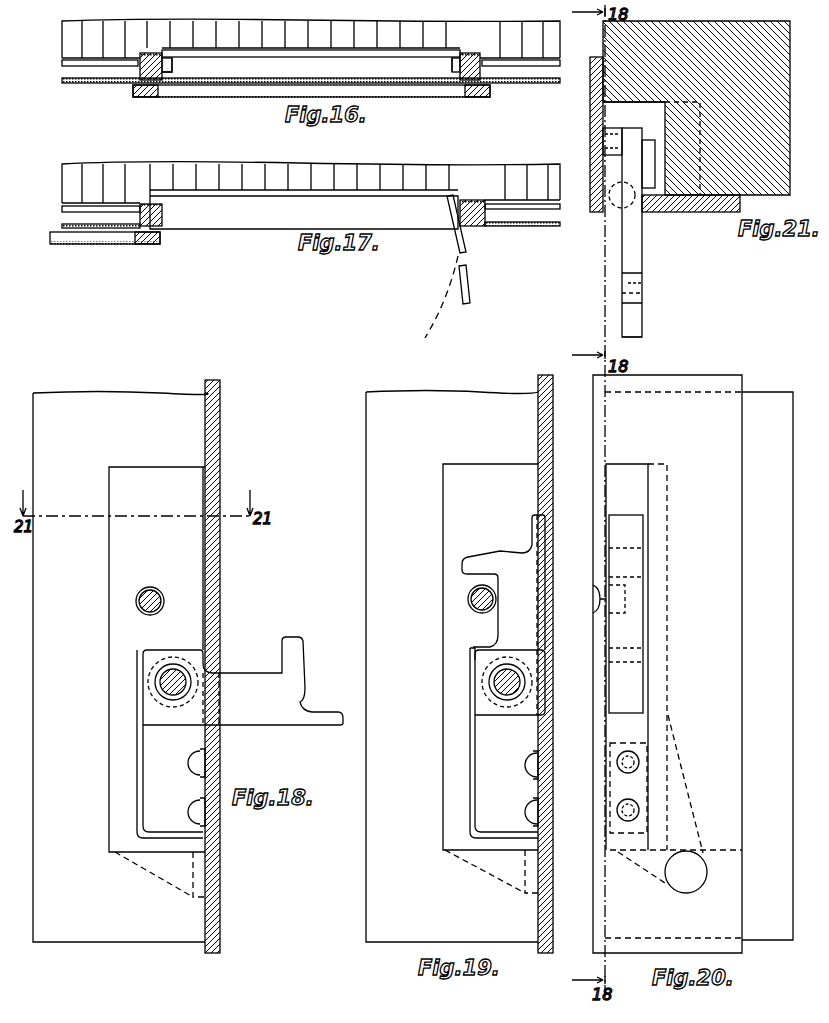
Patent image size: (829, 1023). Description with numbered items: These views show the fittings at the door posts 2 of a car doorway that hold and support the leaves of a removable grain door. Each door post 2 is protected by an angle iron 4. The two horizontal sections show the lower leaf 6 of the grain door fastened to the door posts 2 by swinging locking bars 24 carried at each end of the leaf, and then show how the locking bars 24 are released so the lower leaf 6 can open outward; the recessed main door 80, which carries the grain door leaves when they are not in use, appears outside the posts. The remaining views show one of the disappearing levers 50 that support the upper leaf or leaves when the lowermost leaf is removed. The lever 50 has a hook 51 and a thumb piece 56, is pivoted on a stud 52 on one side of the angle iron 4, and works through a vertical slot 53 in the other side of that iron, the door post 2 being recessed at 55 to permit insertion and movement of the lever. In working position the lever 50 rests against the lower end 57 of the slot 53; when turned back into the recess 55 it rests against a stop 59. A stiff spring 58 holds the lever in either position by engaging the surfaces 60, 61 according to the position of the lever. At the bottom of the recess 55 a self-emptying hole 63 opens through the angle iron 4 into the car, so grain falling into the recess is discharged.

In FIG. 16, the door post 2 is at (140, 82).
In FIG. 17, the door post 2 is at (144, 242).
In FIG. 21, the door post 2 is at (696, 108).
In FIG. 16, the angle iron 4 is at (165, 55).
In FIG. 17, the angle iron 4 is at (165, 210).
In FIG. 21, the angle iron 4 is at (590, 115).
In FIG. 18, the angle iron 4 is at (220, 381).
In FIG. 19, the angle iron 4 is at (545, 664).
In FIG. 16, the lower leaf 6 is at (284, 57).
In FIG. 17, the lower leaf 6 is at (341, 201).
In FIG. 16, the swinging locking bar 24 is at (182, 78).
In FIG. 16, the recessed main door 80 is at (408, 98).
In FIG. 17, the recessed main door 80 is at (88, 245).
In FIG. 21, the swinging lever 50 is at (612, 256).
In FIG. 18, the swinging lever 50 is at (262, 725).
In FIG. 19, the swinging lever 50 is at (532, 594).
In FIG. 20, the swinging lever 50 is at (605, 614).
In FIG. 21, the hook 51 is at (637, 291).
In FIG. 18, the hook 51 is at (296, 641).
In FIG. 19, the hook 51 is at (485, 548).
In FIG. 20, the hook 51 is at (617, 599).
In FIG. 21, the stud 52 is at (655, 206).
In FIG. 18, the stud 52 is at (183, 676).
In FIG. 19, the stud 52 is at (505, 662).
In FIG. 20, the stud 52 is at (658, 662).
In FIG. 21, the vertical slot 53 is at (643, 215).
In FIG. 18, the vertical slot 53 is at (218, 556).
In FIG. 21, the recess 55 is at (600, 148).
In FIG. 18, the recess 55 is at (186, 472).
In FIG. 19, the recess 55 is at (490, 657).
In FIG. 20, the recess 55 is at (637, 483).
In FIG. 21, the thumb piece 56 is at (640, 332).
In FIG. 18, the thumb piece 56 is at (320, 712).
In FIG. 19, the thumb piece 56 is at (535, 525).
In FIG. 18, the lower end of the slot 57 is at (200, 740).
In FIG. 19, the lower end of the slot 57 is at (545, 722).
In FIG. 20, the lower end of the slot 57 is at (636, 724).
In FIG. 18, the stiff spring 58 is at (132, 773).
In FIG. 19, the stiff spring 58 is at (466, 773).
In FIG. 20, the stiff spring 58 is at (628, 788).
In FIG. 21, the stop 59 is at (614, 124).
In FIG. 18, the stop 59 is at (148, 595).
In FIG. 19, the stop 59 is at (464, 602).
In FIG. 18, the surface 60 is at (132, 690).
In FIG. 19, the surface 60 is at (502, 715).
In FIG. 21, the surface 61 is at (622, 195).
In FIG. 18, the surface 61 is at (153, 643).
In FIG. 19, the surface 61 is at (466, 686).
In FIG. 18, the self-emptying hole 63 is at (205, 875).
In FIG. 19, the self-emptying hole 63 is at (530, 889).
In FIG. 20, the self-emptying hole 63 is at (691, 888).